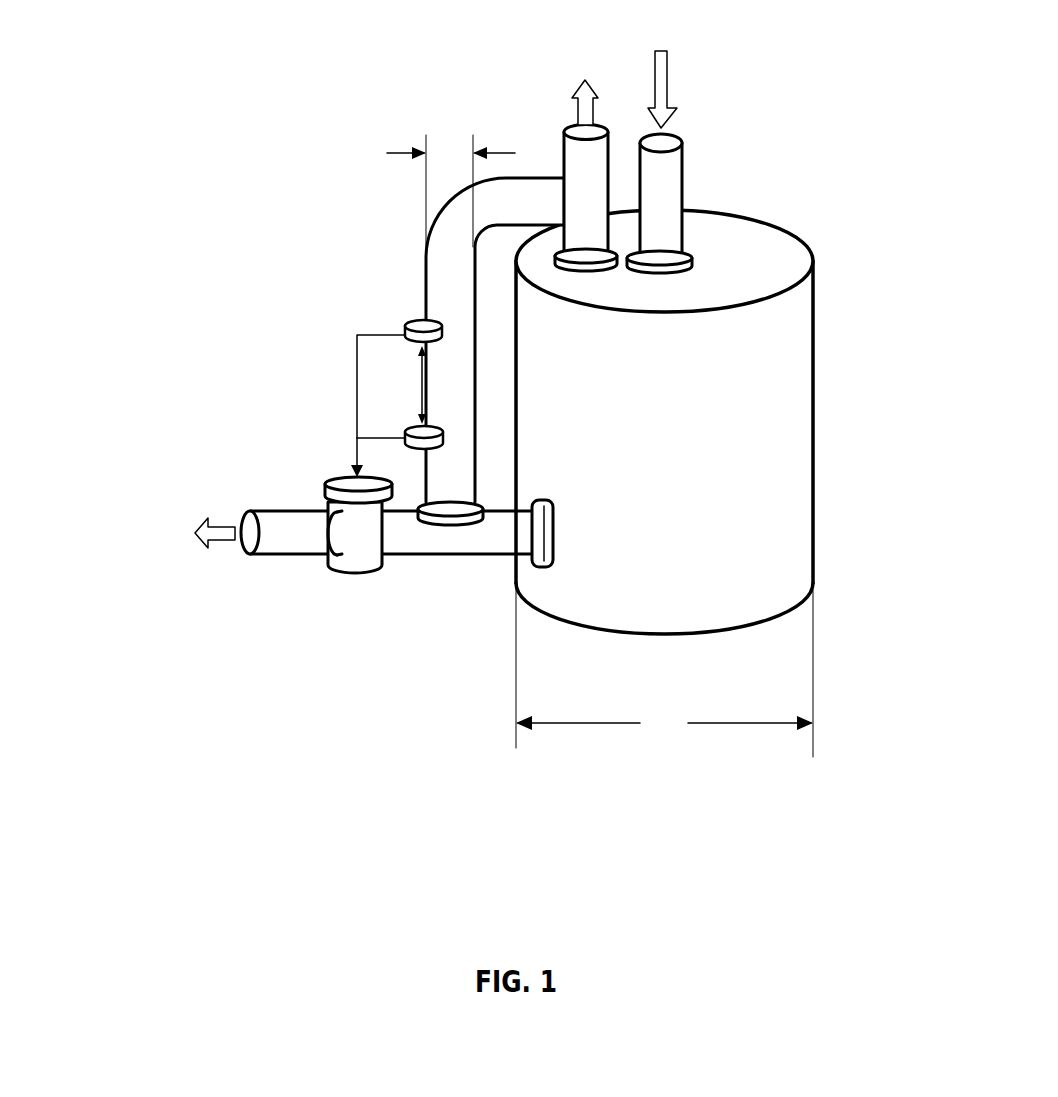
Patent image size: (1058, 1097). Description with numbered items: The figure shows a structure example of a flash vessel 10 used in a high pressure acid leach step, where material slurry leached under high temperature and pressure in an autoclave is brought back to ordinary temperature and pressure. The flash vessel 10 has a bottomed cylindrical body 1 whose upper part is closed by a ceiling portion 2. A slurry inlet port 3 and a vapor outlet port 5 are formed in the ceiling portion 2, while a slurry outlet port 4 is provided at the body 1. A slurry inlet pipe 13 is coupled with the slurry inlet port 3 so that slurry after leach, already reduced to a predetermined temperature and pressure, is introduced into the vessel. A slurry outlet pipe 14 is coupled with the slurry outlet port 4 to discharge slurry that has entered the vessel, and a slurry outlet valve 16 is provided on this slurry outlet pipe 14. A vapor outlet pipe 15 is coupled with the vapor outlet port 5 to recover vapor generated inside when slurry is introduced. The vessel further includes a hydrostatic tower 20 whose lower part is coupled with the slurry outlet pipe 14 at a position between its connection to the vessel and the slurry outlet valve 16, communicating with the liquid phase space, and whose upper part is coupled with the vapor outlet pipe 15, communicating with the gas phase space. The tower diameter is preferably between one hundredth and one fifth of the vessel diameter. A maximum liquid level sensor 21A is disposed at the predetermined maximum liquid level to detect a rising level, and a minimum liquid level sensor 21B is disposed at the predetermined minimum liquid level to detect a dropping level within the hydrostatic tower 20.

The body 1 is at (694, 431).
The ceiling portion 2 is at (686, 228).
The slurry inlet port 3 is at (694, 209).
The slurry outlet port 4 is at (506, 587).
The vapor outlet port 5 is at (556, 249).
The flash vessel 10 is at (385, 887).
The slurry inlet pipe 13 is at (687, 177).
The slurry outlet pipe 14 is at (386, 585).
The vapor outlet pipe 15 is at (545, 183).
The slurry outlet valve 16 is at (315, 470).
The hydrostatic tower 20 is at (457, 338).
The maximum liquid level sensor 21A is at (382, 294).
The minimum liquid level sensor 21B is at (343, 370).